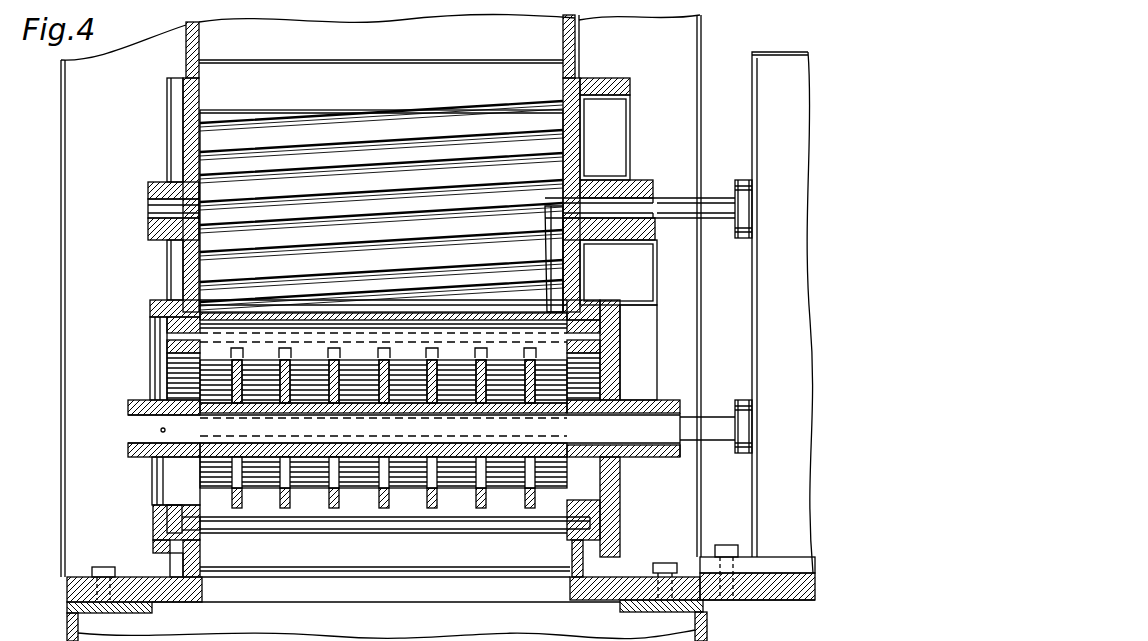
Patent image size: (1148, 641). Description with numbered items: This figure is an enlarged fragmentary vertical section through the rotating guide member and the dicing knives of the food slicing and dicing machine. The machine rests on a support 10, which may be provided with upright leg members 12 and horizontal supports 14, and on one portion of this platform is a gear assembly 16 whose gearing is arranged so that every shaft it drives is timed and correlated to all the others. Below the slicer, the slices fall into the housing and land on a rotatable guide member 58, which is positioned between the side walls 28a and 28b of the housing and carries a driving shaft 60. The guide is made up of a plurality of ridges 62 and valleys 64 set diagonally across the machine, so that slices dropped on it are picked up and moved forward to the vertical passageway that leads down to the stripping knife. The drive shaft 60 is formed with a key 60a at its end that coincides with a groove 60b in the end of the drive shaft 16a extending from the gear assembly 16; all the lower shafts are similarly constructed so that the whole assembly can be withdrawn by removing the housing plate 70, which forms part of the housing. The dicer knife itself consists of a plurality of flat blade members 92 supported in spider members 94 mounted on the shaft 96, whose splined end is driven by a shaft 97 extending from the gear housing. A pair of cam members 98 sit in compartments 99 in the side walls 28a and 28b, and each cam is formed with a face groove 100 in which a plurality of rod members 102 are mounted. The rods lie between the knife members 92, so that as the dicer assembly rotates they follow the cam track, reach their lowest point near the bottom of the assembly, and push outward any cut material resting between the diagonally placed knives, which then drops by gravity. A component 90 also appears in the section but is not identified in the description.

The support 10 is at (80, 577).
The upright leg members 12 is at (72, 418).
The horizontal supports 14 is at (67, 615).
The gear assembly 16 is at (778, 57).
The drive shaft 16a is at (735, 205).
The side wall 28a is at (185, 128).
The side wall 28b is at (568, 120).
The rotatable guide member 58 is at (308, 108).
The driving shaft 60 is at (150, 203).
The key 60a is at (667, 207).
The groove 60b is at (663, 205).
The ridges 62 is at (388, 212).
The valleys 64 is at (452, 165).
The housing plate 70 is at (183, 258).
The stator 90 is at (192, 385).
The flat blade members 92 is at (165, 303).
The spider members 94 is at (338, 488).
The shaft 96 is at (132, 428).
The shaft 97 is at (713, 415).
The cam members 98 is at (176, 326).
The compartments 99 is at (176, 524).
The face groove 100 is at (170, 500).
The rod members 102 is at (177, 340).